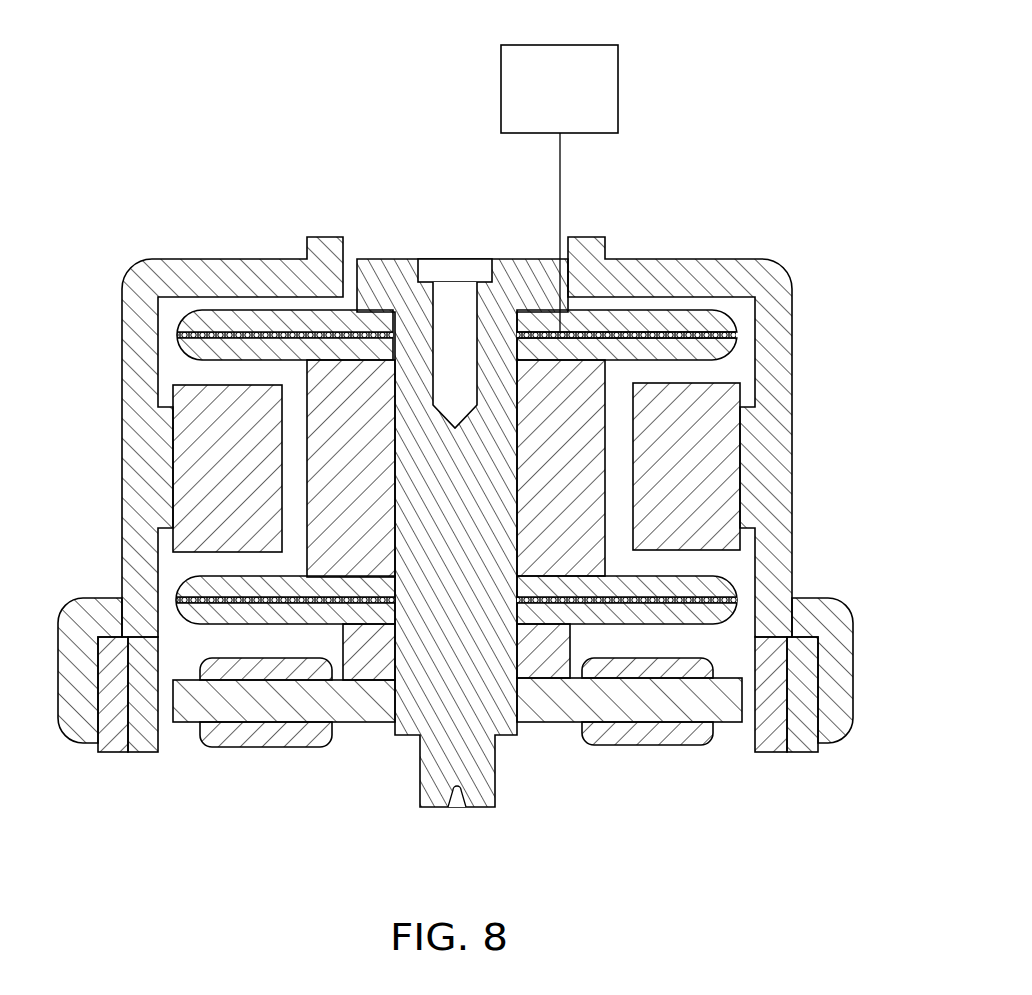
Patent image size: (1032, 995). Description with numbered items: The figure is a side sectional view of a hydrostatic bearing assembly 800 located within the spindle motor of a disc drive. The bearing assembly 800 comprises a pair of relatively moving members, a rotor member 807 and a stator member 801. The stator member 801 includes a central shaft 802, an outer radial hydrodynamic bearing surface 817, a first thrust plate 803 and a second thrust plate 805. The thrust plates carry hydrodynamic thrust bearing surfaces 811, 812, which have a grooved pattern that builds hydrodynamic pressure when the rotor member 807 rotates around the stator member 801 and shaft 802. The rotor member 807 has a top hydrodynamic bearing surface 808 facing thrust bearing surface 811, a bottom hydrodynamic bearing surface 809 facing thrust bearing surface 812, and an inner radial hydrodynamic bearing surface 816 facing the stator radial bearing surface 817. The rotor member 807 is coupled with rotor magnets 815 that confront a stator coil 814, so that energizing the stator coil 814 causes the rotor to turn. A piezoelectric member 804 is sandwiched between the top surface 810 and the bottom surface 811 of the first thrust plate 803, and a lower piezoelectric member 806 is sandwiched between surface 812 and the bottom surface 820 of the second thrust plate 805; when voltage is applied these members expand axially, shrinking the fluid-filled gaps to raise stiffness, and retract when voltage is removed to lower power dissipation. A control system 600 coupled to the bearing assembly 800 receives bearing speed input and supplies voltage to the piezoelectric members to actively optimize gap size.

The control system 600 is at (596, 44).
The bearing assembly 800 is at (755, 119).
The stator member 801 is at (388, 727).
The shaft 802 is at (432, 782).
The first thrust plate 803 is at (747, 328).
The piezoelectric member 804 is at (674, 333).
The second thrust plate 805 is at (720, 587).
The lower piezoelectric member 806 is at (767, 635).
The rotor member 807 is at (730, 467).
The top hydrodynamic bearing surface 808 is at (720, 371).
The bottom hydrodynamic bearing surface 809 is at (748, 567).
The top surface of thrust plate 810 is at (655, 310).
The hydrodynamic thrust bearing surface 811 is at (690, 375).
The hydrodynamic thrust bearing surface 812 is at (648, 576).
The stator coil 814 is at (256, 735).
The rotor magnets 815 is at (108, 730).
The inner radial hydrodynamic bearing surface 816 is at (280, 437).
The outer radial hydrodynamic bearing surface 817 is at (300, 383).
The bottom surface of thrust plate 820 is at (680, 617).